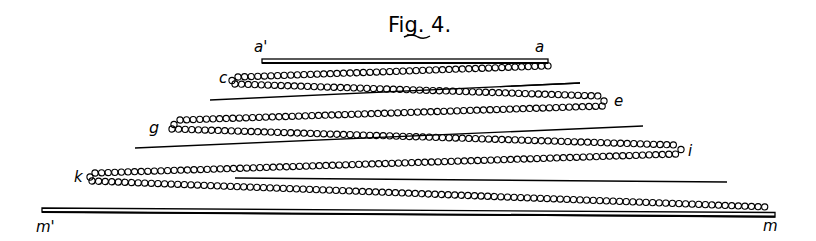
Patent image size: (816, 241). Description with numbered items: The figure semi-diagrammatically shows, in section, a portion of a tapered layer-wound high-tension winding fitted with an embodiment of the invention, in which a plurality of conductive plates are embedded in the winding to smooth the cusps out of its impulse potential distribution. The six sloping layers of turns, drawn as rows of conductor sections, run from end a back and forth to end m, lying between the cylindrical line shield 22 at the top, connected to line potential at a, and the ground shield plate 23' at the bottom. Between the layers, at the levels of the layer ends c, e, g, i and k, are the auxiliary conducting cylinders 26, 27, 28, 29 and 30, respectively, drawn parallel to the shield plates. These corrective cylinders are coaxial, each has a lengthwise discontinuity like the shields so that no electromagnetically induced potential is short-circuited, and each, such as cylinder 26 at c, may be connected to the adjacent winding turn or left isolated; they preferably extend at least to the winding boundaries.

The line shield 22 is at (489, 53).
The auxiliary conducting cylinder 26 is at (561, 83).
The auxiliary conducting cylinder 27 is at (223, 100).
The auxiliary conducting cylinder 28 is at (603, 103).
The auxiliary conducting cylinder 29 is at (200, 146).
The auxiliary conducting cylinder 30 is at (697, 181).
The lower bar (m'-m) 23' is at (408, 221).